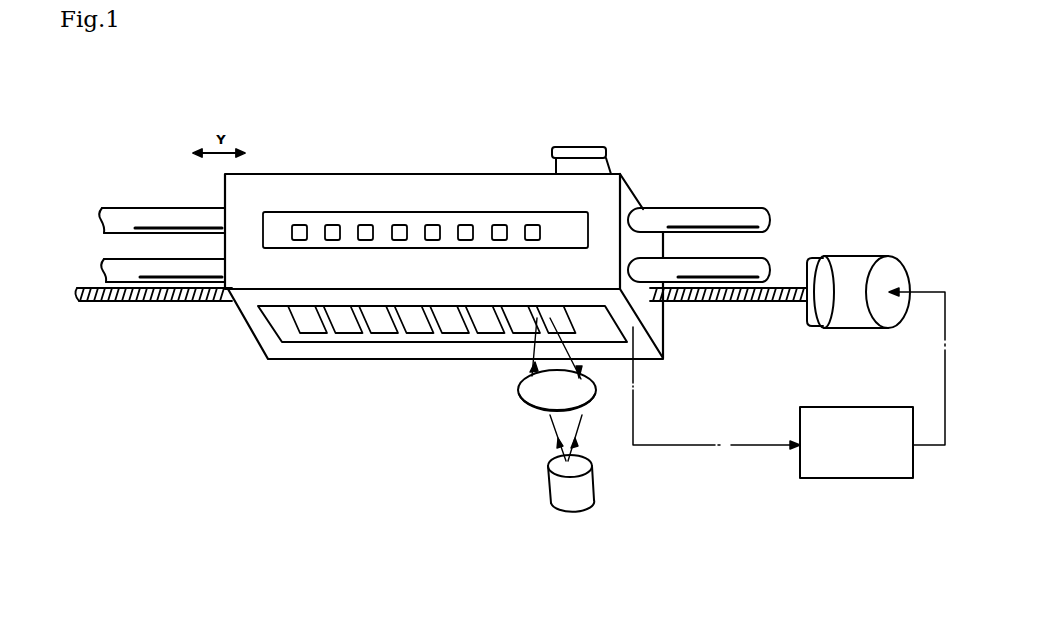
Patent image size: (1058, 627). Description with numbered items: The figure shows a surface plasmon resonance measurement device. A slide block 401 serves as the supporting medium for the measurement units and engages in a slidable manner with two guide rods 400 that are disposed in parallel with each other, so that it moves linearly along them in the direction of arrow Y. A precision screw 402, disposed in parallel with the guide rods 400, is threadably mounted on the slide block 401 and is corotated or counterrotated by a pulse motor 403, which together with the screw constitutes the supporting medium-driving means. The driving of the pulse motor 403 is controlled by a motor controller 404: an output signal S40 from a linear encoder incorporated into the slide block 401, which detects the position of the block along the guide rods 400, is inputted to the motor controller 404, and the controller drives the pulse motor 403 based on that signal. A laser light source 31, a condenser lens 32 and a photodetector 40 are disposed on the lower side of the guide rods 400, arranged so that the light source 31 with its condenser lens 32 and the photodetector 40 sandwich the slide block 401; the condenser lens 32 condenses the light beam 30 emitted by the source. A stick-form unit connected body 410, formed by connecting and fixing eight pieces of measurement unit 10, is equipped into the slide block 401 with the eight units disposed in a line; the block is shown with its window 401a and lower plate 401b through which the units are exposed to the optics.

The slide block 401 is at (390, 173).
The nozzle opening window 401a is at (561, 223).
The nozzle plate 401b is at (275, 330).
The unit connected body 410 is at (278, 218).
The measurement unit 10 is at (505, 334).
The photodetector 40 is at (583, 146).
The guide rod 400 is at (692, 265).
The precision screw 402 is at (717, 302).
The pulse motor 403 is at (843, 328).
The motor controller 404 is at (833, 478).
The output signal S40 is at (690, 443).
The light beam 30 is at (552, 448).
The laser light source 31 is at (548, 493).
The condenser lens 32 is at (525, 417).